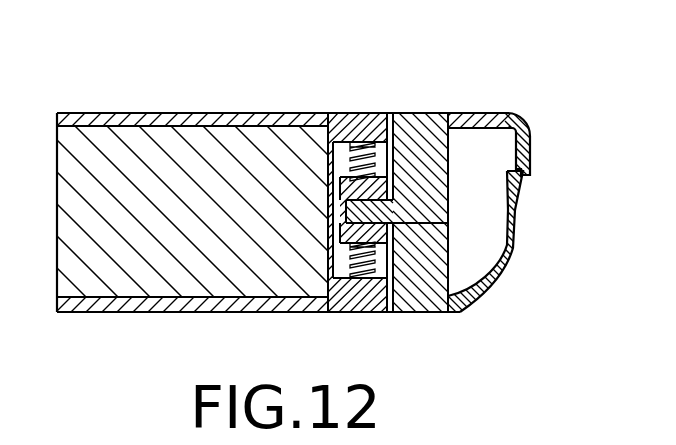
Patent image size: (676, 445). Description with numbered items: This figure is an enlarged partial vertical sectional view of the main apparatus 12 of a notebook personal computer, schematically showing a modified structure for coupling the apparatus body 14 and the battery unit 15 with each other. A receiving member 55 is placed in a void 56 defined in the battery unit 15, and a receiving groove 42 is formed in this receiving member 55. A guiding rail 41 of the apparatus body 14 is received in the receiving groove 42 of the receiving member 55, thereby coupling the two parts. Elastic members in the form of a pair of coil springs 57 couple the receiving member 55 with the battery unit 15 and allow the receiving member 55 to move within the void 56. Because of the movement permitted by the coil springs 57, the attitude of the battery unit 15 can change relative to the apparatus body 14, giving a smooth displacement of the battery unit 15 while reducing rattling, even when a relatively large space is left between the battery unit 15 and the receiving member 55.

The main apparatus 12 is at (503, 112).
The apparatus body 14 is at (513, 248).
The battery unit 15 is at (298, 110).
The guiding rail 41 is at (347, 207).
The receiving groove 42 is at (340, 233).
The receiving member 55 is at (340, 176).
The void 56 is at (392, 298).
The coil springs 57 is at (372, 153).